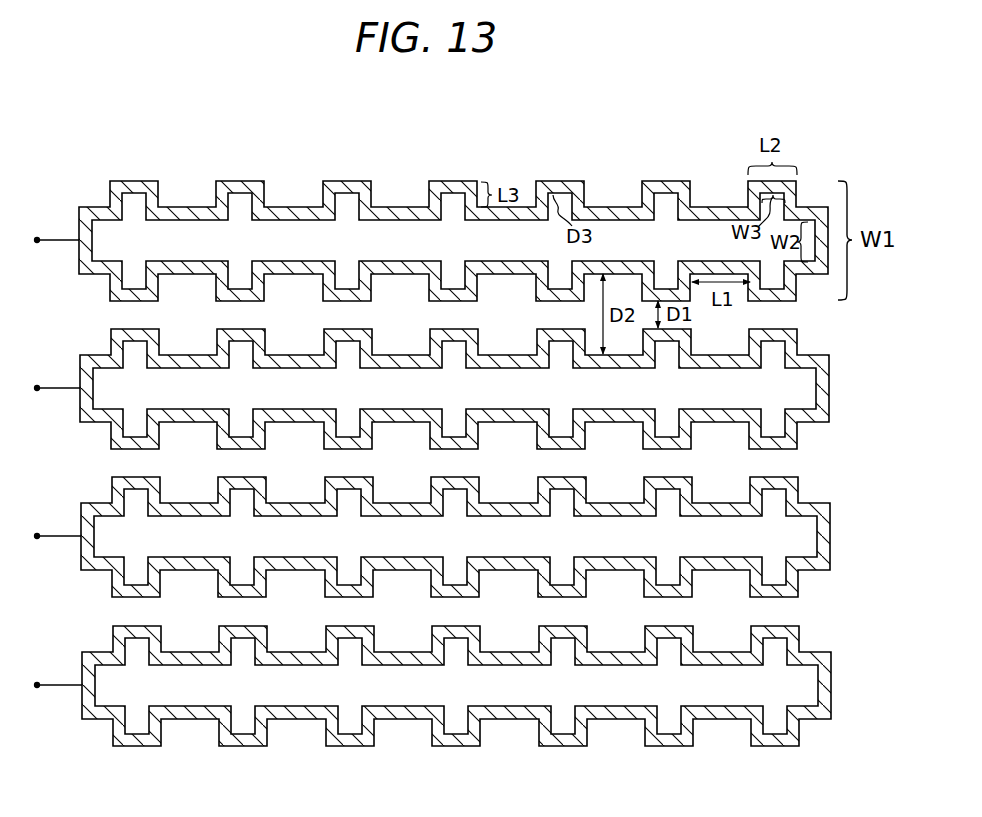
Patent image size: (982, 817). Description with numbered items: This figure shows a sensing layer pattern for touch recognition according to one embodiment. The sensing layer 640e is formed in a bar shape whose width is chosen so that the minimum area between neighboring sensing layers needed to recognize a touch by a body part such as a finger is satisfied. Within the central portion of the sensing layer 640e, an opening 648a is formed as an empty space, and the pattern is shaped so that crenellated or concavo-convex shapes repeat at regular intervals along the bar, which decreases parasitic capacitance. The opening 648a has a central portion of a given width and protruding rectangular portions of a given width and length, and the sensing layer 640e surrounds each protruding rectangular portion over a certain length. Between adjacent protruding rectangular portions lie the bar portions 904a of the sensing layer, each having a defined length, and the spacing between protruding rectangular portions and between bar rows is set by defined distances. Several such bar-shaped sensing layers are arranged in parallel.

The sensing layer 640e is at (350, 181).
The bar portions 904a is at (408, 210).
The opening 648a is at (634, 237).